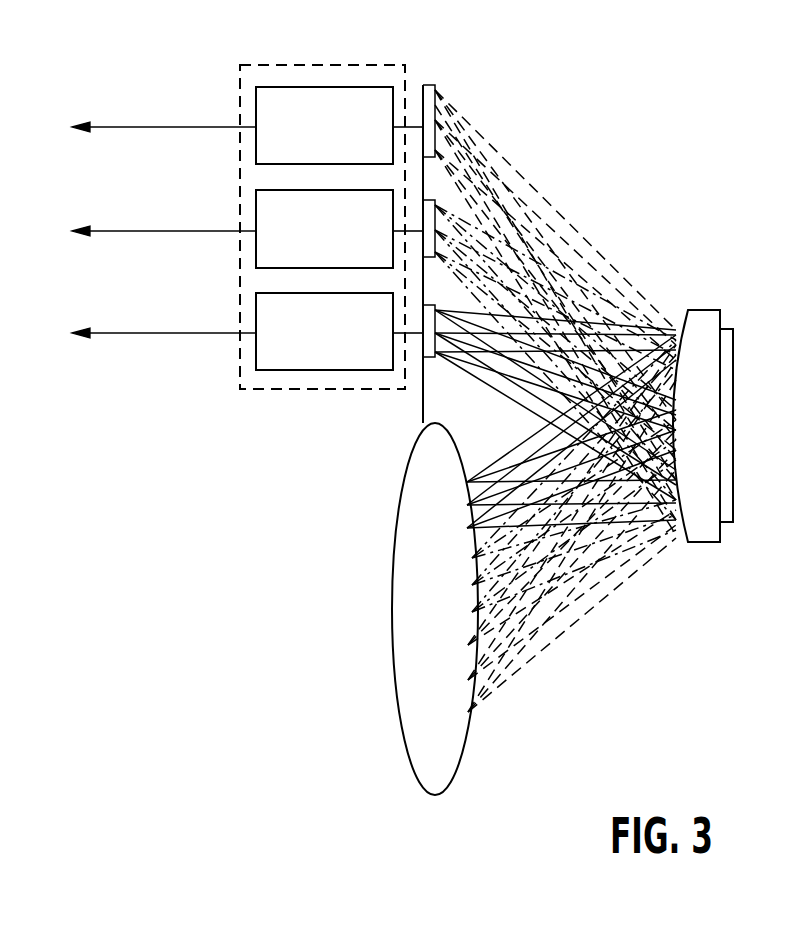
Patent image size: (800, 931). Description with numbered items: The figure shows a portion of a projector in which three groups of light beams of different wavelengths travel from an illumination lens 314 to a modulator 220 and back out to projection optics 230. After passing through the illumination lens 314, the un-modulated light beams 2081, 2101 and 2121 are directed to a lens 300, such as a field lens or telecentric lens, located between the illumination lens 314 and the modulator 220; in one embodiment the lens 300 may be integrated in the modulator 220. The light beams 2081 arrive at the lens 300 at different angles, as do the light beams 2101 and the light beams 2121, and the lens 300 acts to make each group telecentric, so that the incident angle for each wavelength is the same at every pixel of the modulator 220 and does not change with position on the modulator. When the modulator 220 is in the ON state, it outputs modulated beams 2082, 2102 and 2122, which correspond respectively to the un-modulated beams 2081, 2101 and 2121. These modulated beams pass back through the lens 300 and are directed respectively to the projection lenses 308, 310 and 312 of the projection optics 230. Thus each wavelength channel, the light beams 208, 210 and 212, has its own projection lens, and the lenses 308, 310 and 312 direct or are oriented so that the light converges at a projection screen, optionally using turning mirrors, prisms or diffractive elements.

The projection optics 230 is at (331, 64).
The projection lens 308 is at (343, 158).
The projection lens 310 is at (343, 261).
The projection lens 312 is at (343, 364).
The light beams 208 is at (374, 393).
The modulated beams 2082 is at (142, 127).
The light beams 2081 is at (467, 717).
The light beams 210 is at (374, 387).
The modulated beams 2102 is at (142, 231).
The light beams 2101 is at (472, 552).
The light beams 212 is at (374, 404).
The modulated beams 2122 is at (142, 333).
The light beams 2121 is at (464, 477).
The lens 300 is at (714, 424).
The modulator 220 is at (733, 357).
The illumination lens 314 is at (455, 773).